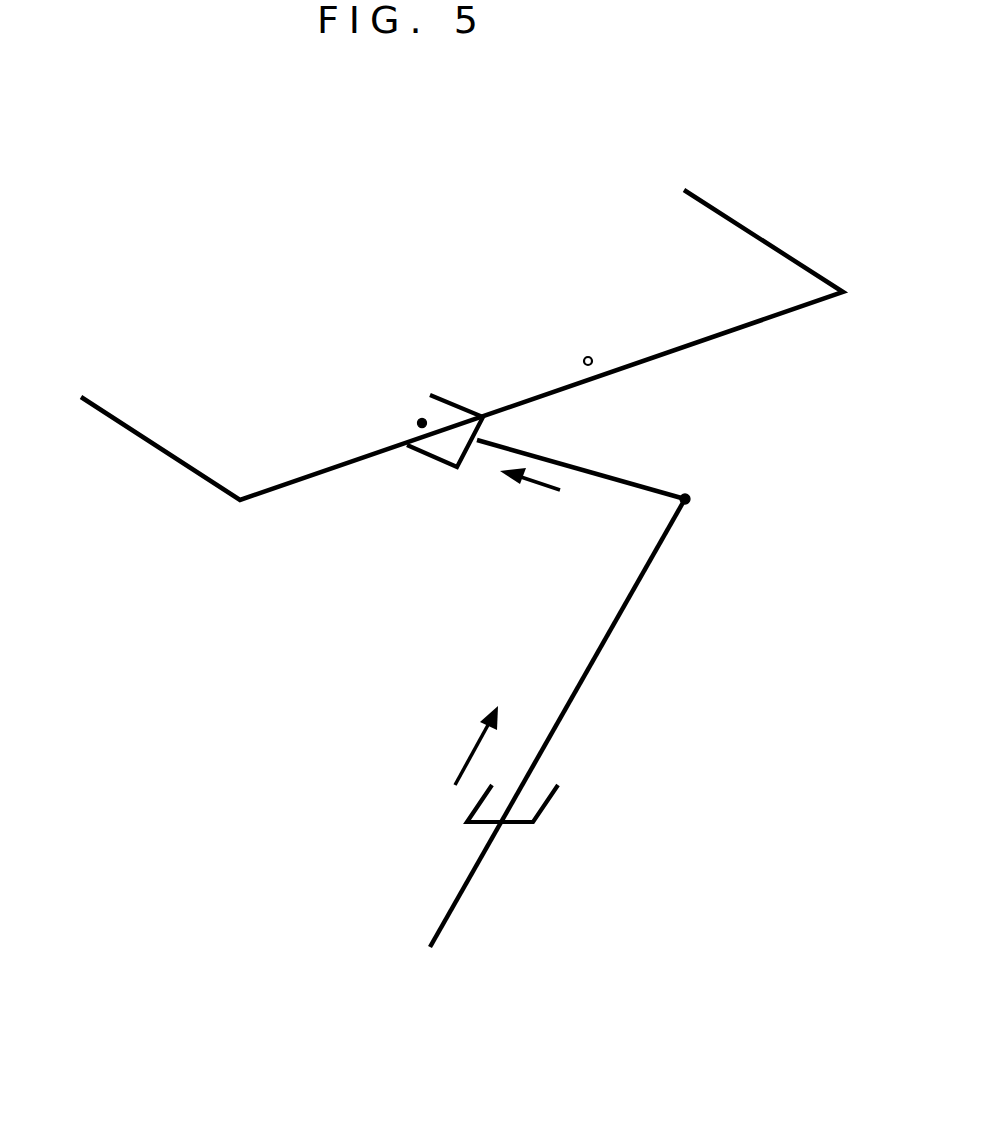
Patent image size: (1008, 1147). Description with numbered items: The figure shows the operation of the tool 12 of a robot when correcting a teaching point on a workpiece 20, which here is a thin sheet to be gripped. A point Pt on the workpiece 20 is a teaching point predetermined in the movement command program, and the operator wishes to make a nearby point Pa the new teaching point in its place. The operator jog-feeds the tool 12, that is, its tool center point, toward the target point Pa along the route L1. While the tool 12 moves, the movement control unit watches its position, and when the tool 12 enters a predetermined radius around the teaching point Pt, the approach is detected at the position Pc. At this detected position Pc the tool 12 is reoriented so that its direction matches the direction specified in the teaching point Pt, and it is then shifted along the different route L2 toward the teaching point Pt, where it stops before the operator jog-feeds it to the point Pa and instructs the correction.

The workpiece 20 is at (748, 293).
The tool 12 is at (452, 402).
The teaching point Pt is at (418, 423).
The target point Pa is at (589, 357).
The detected position Pc is at (690, 499).
The route L1 is at (610, 638).
The route L2 is at (613, 477).